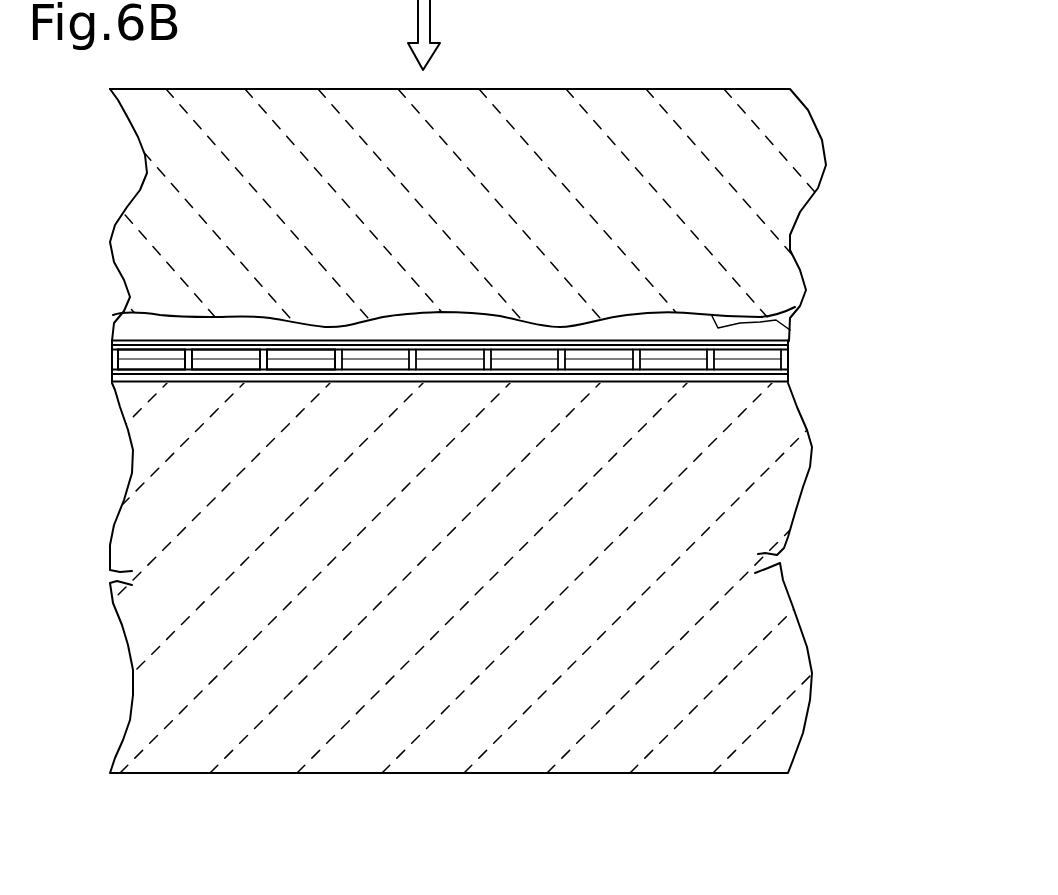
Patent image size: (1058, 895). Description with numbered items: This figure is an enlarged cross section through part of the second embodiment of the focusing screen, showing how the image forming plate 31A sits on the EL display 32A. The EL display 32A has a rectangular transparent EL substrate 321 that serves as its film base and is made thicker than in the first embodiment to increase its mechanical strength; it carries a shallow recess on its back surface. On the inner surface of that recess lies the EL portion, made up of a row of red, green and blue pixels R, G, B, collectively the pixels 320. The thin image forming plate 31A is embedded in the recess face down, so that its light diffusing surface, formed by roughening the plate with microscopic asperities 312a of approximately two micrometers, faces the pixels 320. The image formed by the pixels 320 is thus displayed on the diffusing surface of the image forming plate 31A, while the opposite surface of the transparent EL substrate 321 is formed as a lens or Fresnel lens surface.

The image forming plate 31A is at (792, 194).
The microscopic asperities 312a is at (795, 307).
The pixels 320 is at (80, 426).
The blue pixel B is at (292, 360).
The green pixel G is at (216, 362).
The red pixel R is at (148, 361).
The EL display 32A is at (785, 515).
The transparent EL substrate 321 is at (778, 738).